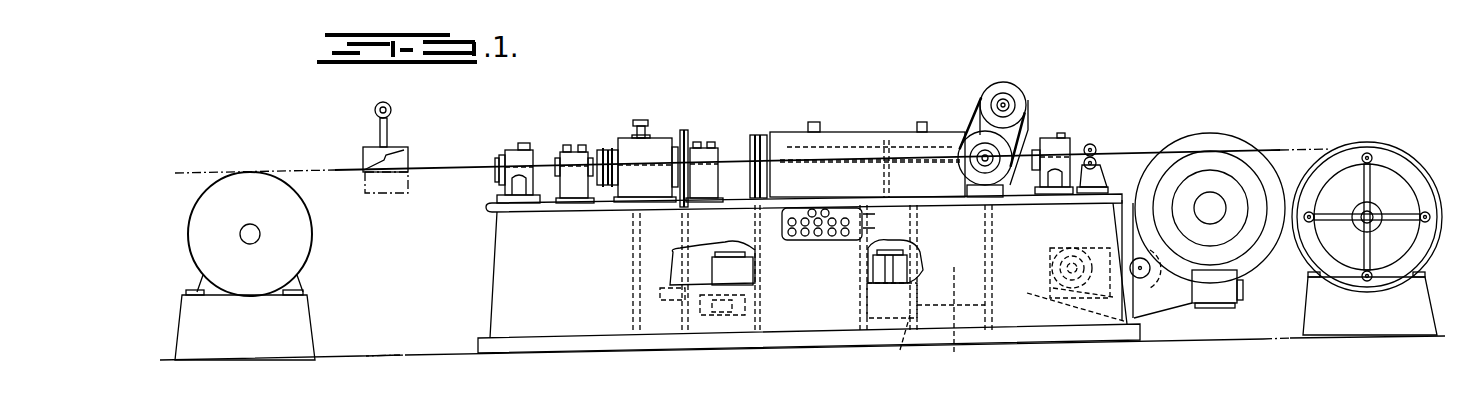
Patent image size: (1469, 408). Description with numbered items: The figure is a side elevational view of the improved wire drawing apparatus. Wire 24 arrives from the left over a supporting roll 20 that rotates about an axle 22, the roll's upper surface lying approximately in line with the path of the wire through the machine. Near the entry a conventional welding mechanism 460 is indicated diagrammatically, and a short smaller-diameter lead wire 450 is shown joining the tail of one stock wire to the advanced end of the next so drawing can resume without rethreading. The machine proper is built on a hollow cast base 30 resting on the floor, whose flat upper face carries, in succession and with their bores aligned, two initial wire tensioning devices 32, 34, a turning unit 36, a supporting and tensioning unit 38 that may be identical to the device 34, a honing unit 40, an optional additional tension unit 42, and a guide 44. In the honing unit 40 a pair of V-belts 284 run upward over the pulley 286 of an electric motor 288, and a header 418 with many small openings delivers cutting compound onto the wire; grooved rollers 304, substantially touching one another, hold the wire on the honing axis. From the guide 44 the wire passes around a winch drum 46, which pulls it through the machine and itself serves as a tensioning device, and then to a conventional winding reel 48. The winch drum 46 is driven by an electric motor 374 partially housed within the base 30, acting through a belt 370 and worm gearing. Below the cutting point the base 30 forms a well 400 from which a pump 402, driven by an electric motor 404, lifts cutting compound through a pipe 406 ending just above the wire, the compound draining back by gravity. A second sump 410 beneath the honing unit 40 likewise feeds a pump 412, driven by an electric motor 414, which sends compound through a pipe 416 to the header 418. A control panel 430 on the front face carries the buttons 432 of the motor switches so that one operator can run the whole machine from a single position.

The supporting roll 20 is at (300, 228).
The axle 22 is at (256, 240).
The wire 24 is at (306, 170).
The hollow cast base 30 is at (564, 328).
The wire tensioning device 32 is at (509, 150).
The wire tensioning device 34 is at (566, 150).
The turning unit 36 is at (660, 138).
The supporting and tensioning unit 38 is at (707, 148).
The honing unit 40 is at (832, 130).
The tension unit 42 is at (1047, 138).
The guide 44 is at (1105, 168).
The winch drum 46 is at (1205, 165).
The winding reel 48 is at (1320, 250).
The V-belts 284 is at (976, 135).
The pulley 286 is at (1008, 98).
The electric motor 288 is at (990, 55).
The rollers 304 is at (1094, 144).
The belt 370 is at (1105, 252).
The electric motor 374 is at (1065, 307).
The well or receptacle 400 is at (632, 272).
The pump 402 is at (704, 316).
The electric motor 404 is at (757, 270).
The pipe 406 is at (676, 262).
The well or sump 410 is at (953, 319).
The pump 412 is at (901, 344).
The electric motor 414 is at (910, 268).
The pipe 416 is at (887, 268).
The pipe or header 418 is at (848, 142).
The control panel 430 is at (785, 224).
The buttons 432 is at (863, 228).
The lead wire 450 is at (388, 177).
The welding mechanism 460 is at (400, 146).